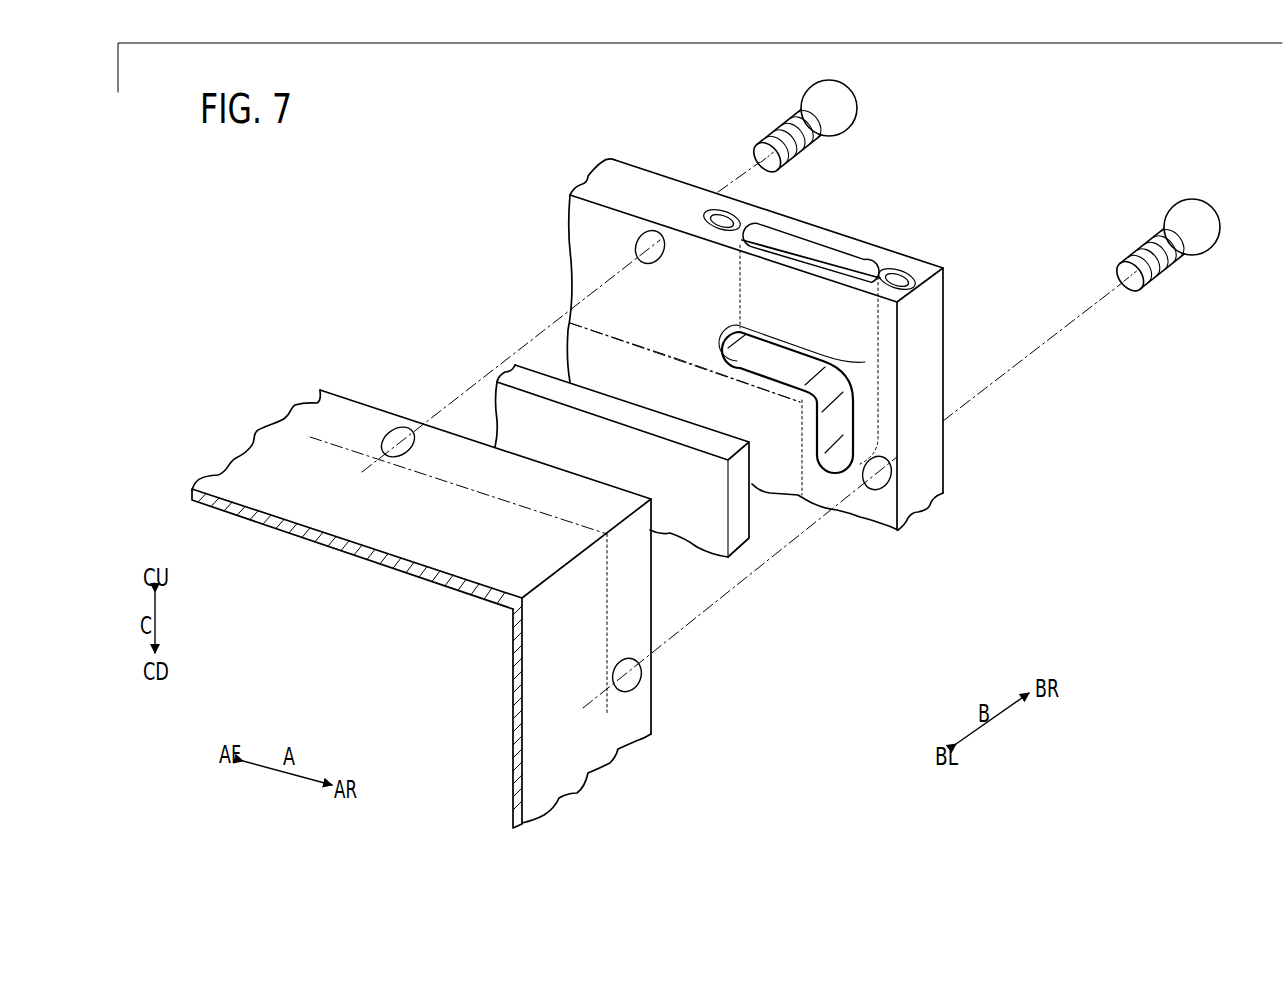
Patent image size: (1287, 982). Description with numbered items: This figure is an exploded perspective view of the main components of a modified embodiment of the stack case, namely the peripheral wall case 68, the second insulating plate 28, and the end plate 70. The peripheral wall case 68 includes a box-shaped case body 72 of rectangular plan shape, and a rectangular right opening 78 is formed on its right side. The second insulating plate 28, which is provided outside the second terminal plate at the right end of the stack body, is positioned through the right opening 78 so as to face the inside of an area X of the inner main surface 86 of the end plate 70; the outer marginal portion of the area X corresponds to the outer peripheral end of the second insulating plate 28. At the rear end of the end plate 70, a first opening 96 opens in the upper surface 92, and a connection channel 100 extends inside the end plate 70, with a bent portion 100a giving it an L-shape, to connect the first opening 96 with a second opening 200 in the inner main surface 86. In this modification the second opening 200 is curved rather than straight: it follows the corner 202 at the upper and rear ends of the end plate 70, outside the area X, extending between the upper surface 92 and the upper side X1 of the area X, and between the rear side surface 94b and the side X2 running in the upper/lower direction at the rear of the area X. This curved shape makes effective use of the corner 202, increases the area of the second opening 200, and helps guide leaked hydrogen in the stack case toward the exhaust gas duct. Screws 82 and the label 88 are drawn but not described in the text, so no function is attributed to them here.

The peripheral wall case 68 is at (421, 585).
The case body 72 is at (347, 417).
The right opening 78 is at (448, 482).
The second insulating plate 28 is at (513, 374).
The mounting bracket 88 is at (805, 349).
The upper surface 92 is at (756, 208).
The rear side surface 94b is at (930, 472).
The end plate 70 is at (580, 245).
The first opening 96 is at (832, 257).
The connection channel 100 is at (842, 370).
The bent portion 100a is at (865, 362).
The second opening 200 is at (777, 362).
The corner 202 is at (946, 264).
The inner main surface 86 is at (880, 507).
The screw 82 is at (858, 102).
The area X is at (634, 338).
The upper side X1 is at (675, 358).
The side X2 is at (800, 448).